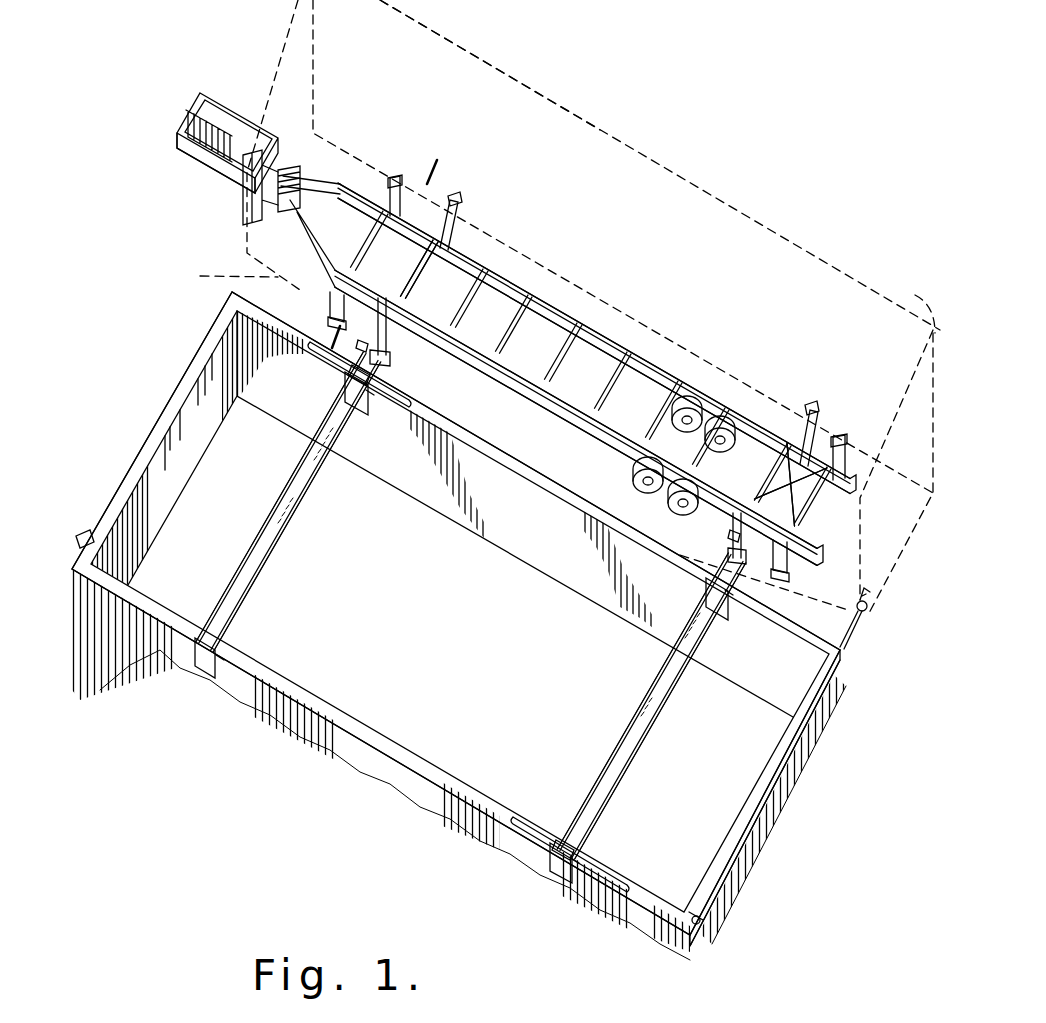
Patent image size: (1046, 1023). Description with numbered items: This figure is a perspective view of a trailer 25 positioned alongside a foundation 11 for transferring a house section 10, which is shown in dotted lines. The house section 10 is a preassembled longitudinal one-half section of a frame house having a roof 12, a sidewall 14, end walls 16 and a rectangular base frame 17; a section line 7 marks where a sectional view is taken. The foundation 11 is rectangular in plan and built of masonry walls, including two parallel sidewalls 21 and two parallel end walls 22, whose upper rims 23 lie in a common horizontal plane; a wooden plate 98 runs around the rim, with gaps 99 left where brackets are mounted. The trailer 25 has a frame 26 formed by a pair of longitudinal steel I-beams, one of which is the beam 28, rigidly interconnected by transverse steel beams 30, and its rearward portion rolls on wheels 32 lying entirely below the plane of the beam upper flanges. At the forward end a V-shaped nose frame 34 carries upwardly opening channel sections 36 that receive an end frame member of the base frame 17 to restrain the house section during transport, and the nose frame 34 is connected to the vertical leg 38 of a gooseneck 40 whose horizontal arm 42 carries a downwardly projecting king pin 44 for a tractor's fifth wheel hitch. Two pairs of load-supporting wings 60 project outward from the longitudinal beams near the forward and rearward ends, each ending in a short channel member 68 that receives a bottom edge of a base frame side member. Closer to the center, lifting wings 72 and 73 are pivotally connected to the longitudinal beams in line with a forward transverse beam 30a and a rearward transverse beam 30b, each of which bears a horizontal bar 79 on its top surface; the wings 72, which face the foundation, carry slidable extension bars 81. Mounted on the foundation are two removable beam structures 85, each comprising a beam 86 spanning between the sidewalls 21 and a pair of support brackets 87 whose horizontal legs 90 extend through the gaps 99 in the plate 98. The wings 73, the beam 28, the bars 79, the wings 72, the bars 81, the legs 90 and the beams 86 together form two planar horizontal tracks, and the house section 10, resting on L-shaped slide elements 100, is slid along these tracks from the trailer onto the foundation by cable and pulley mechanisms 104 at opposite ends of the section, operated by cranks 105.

The section line 7- 7 is at (434, 170).
The house section 10 is at (600, 130).
The foundation 11 is at (383, 717).
The roof 12 is at (462, 97).
The sidewall 14 is at (880, 537).
The end walls 16 is at (300, 36).
The base frame 17 is at (225, 275).
The sidewalls 21 is at (505, 548).
The end walls 22 is at (172, 483).
The upper rims 23 is at (127, 485).
The trailer 25 is at (567, 307).
The frame 26 is at (600, 350).
The longitudinal steel I-beam 28 is at (500, 280).
The transverse steel beams 30 is at (505, 343).
The forward transverse beam 30a is at (410, 288).
The rearward transverse beam 30b is at (810, 515).
The wheels 32 is at (728, 425).
The nose frame 34 is at (330, 173).
The transverse channel sections 36 is at (295, 166).
The vertical leg 38 is at (243, 190).
The gooseneck 40 is at (213, 100).
The horizontal arm 42 is at (243, 115).
The king pin 44 is at (187, 143).
The load-supporting wings 60 is at (392, 205).
The channel member 68 is at (397, 176).
The lifting wing 72 is at (386, 338).
The lifting wing 73 is at (447, 232).
The horizontal bar 79 is at (417, 268).
The extension bar 81 is at (380, 368).
The beam structures 85 is at (292, 518).
The beam 86 is at (296, 480).
The support brackets 87 is at (355, 415).
The horizontal leg 90 is at (372, 400).
The wooden plate 98 is at (320, 360).
The gaps 99 is at (350, 378).
The slide elements 100 is at (452, 198).
The cable and pulley mechanisms 104 is at (852, 635).
The cranks 105 is at (86, 534).